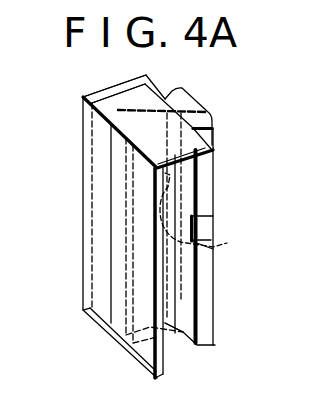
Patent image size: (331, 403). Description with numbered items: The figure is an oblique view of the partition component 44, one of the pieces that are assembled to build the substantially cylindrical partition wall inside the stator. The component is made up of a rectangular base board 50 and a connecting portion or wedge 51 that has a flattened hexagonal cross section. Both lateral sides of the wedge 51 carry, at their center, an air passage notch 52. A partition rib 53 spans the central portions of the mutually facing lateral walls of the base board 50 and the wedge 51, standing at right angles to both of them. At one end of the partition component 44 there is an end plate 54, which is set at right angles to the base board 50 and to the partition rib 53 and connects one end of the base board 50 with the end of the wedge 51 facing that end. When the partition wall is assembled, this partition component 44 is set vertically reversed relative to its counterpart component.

The base board 50 is at (95, 199).
The partition component 44 is at (95, 273).
The end plate 54 is at (108, 103).
The wedge 51 is at (208, 112).
The air passage notch 52 is at (203, 226).
The partition rib 53 is at (167, 323).